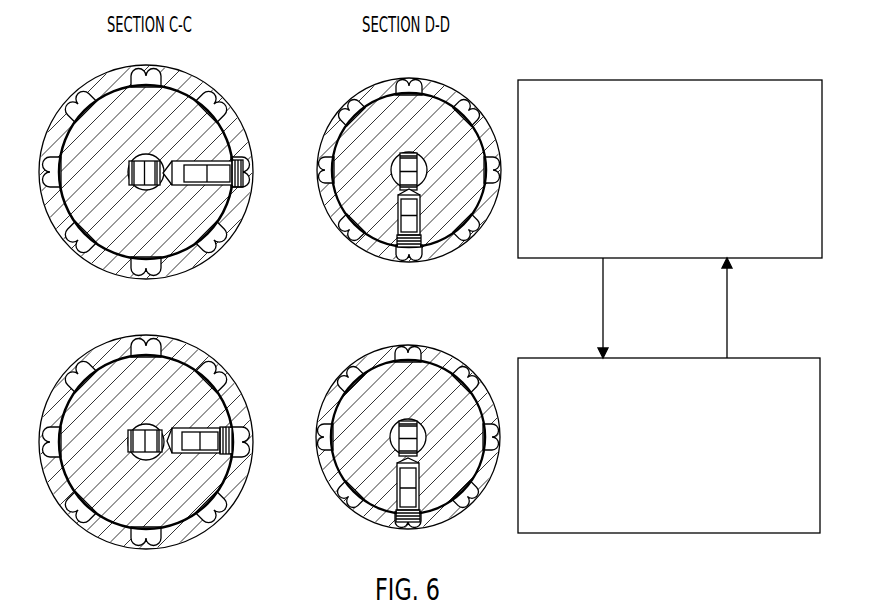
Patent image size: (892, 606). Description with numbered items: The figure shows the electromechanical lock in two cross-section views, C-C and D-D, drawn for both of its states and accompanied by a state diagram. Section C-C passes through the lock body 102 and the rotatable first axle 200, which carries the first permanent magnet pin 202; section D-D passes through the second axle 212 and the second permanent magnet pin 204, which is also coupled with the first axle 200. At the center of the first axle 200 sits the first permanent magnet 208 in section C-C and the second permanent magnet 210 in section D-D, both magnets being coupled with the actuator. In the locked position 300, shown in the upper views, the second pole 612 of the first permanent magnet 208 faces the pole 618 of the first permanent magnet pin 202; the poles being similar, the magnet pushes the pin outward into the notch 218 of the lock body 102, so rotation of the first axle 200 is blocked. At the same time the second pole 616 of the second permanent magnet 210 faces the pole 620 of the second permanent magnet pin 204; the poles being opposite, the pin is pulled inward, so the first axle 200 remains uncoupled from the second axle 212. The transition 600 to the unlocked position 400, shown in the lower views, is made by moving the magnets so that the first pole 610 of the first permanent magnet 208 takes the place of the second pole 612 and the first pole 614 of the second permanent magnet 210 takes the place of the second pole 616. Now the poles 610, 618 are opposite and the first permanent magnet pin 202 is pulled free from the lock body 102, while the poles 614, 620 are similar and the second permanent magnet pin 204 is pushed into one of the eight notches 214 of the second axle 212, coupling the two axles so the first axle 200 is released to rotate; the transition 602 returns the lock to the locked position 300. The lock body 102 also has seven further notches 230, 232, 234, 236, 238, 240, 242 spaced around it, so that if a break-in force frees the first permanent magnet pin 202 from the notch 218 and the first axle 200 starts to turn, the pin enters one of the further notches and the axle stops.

The lock body 102 is at (198, 265).
The first axle 200 is at (180, 108).
The first permanent magnet pin 202 is at (207, 183).
The second permanent magnet pin 204 is at (422, 213).
The first permanent magnet 208 is at (142, 180).
The second permanent magnet 210 is at (400, 172).
The second axle 212 is at (453, 250).
The notch 214 is at (418, 255).
The notch 218 is at (243, 168).
The further notch 230 is at (212, 93).
The further notch 232 is at (145, 87).
The further notch 234 is at (78, 108).
The further notch 236 is at (48, 193).
The further notch 238 is at (72, 235).
The further notch 240 is at (155, 270).
The further notch 242 is at (222, 238).
The locked position 300 is at (617, 112).
The unlocked position 400 is at (612, 389).
The transition 600 is at (630, 308).
The transition 602 is at (756, 308).
The first pole of the first permanent magnet 610 is at (135, 157).
The second pole of the first permanent magnet 612 is at (147, 160).
The first pole of the second permanent magnet 614 is at (397, 163).
The second pole of the second permanent magnet 616 is at (397, 185).
The pole of the first permanent magnet pin 618 is at (192, 158).
The pole of the second permanent magnet pin 620 is at (433, 187).